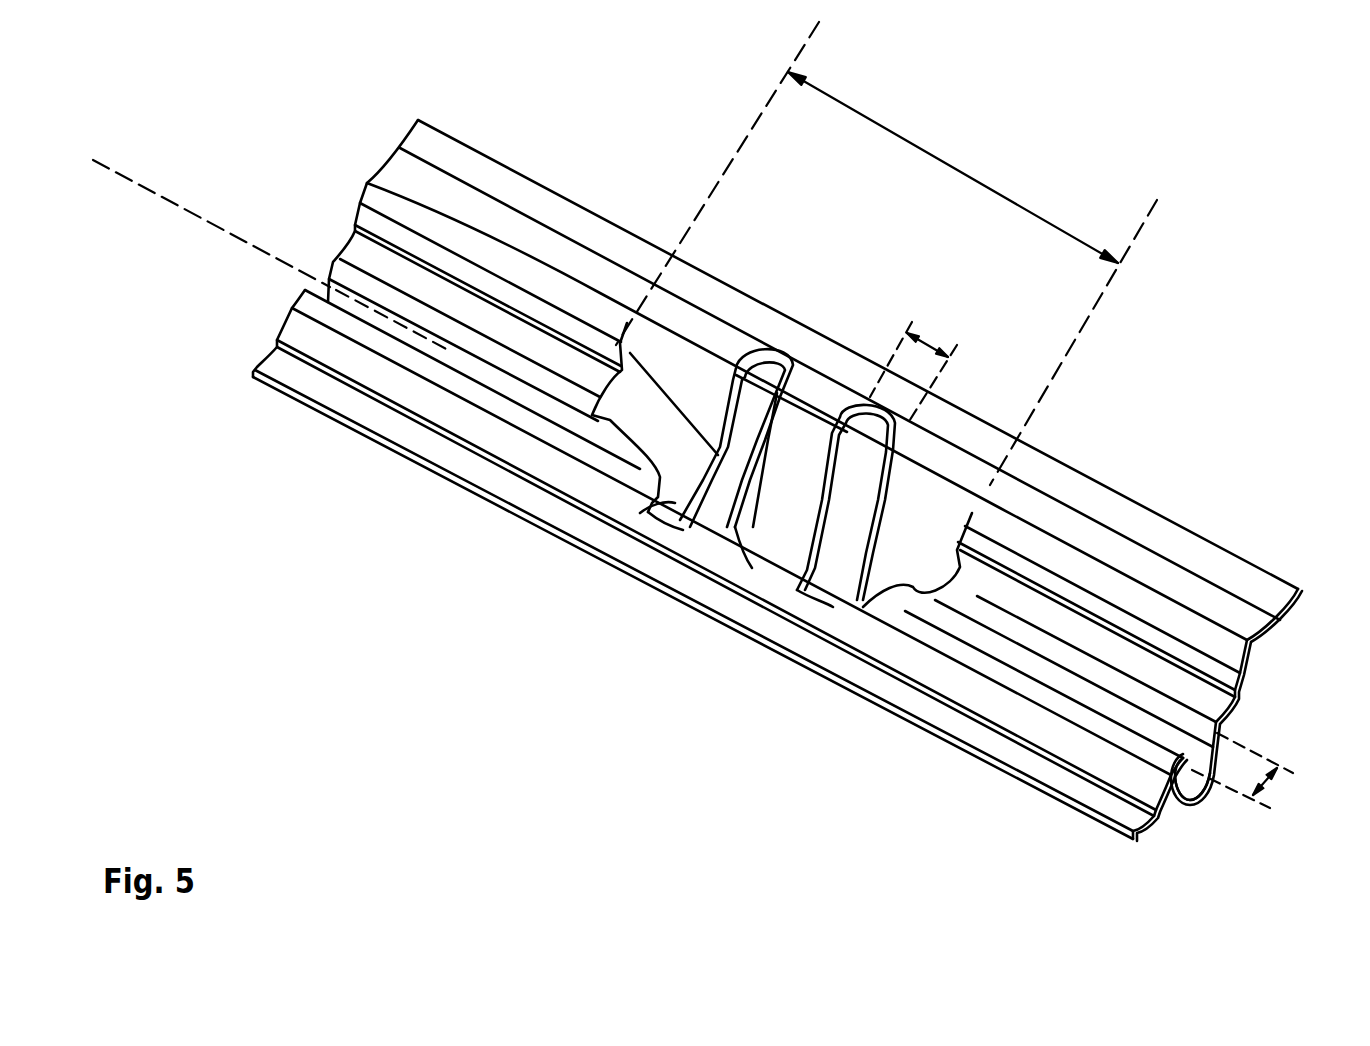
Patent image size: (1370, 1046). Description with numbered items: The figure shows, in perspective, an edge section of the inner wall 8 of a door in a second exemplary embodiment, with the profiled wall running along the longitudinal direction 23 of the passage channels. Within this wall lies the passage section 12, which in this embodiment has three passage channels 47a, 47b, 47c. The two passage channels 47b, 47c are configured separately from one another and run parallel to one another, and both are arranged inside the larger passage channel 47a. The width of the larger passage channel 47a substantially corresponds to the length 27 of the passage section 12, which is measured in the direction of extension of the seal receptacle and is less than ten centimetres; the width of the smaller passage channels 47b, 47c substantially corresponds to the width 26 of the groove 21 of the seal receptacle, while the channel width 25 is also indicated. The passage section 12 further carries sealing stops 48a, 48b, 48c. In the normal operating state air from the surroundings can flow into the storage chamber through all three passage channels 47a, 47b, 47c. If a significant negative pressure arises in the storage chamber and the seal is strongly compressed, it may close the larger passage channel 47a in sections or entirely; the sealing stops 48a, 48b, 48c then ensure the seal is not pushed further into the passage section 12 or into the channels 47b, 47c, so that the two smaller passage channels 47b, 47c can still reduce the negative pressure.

The inner wall 8 is at (1150, 562).
The passage section 12 is at (614, 594).
The groove 21 is at (1198, 795).
The longitudinal direction 23 is at (130, 180).
The width 25 is at (914, 336).
The width of the groove 26 is at (1268, 782).
The length of the passage section 27 is at (953, 167).
The larger passage channel 47a is at (713, 395).
The passage channel 47b is at (763, 395).
The passage channel 47c is at (880, 437).
The sealing stop 48a is at (670, 505).
The sealing stop 48b is at (752, 568).
The sealing stop 48c is at (833, 607).